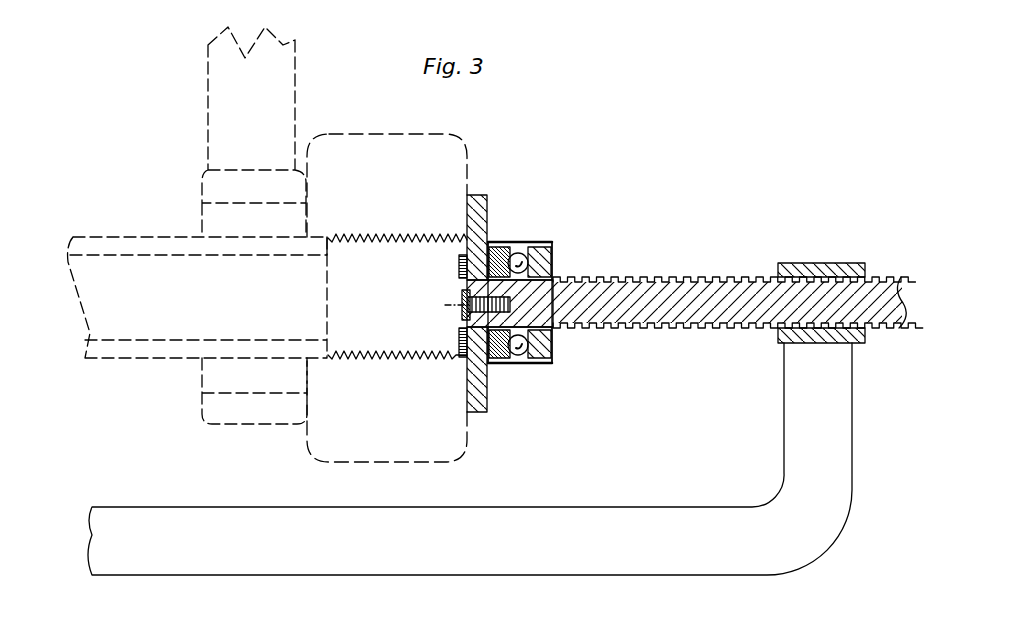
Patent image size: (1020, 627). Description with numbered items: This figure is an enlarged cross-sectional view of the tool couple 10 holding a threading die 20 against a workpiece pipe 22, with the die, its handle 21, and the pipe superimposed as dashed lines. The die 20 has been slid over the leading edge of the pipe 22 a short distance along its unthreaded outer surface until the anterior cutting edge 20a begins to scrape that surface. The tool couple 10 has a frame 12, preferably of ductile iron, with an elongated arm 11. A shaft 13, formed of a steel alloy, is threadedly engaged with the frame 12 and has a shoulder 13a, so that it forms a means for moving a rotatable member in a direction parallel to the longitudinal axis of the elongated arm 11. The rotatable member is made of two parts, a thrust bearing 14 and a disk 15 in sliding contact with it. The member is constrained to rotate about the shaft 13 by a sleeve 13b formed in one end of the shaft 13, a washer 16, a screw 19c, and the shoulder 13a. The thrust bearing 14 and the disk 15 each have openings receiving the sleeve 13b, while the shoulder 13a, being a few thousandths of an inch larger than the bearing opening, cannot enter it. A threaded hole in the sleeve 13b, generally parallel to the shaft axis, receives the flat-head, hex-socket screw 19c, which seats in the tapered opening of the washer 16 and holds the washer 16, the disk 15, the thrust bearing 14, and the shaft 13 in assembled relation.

The tool couple 10 is at (691, 247).
The elongated arm 11 is at (714, 549).
The frame 12 is at (792, 388).
The shaft 13 is at (667, 310).
The shoulder 13a is at (552, 340).
The sleeve 13b is at (552, 275).
The thrust bearing 14 is at (496, 363).
The disk 15 is at (467, 385).
The washer 16 is at (459, 263).
The screw 19c is at (463, 306).
The threading die 20 is at (441, 199).
The anterior cutting edge 20a is at (325, 238).
The bracket 21 is at (266, 199).
The pipe 22 is at (128, 237).